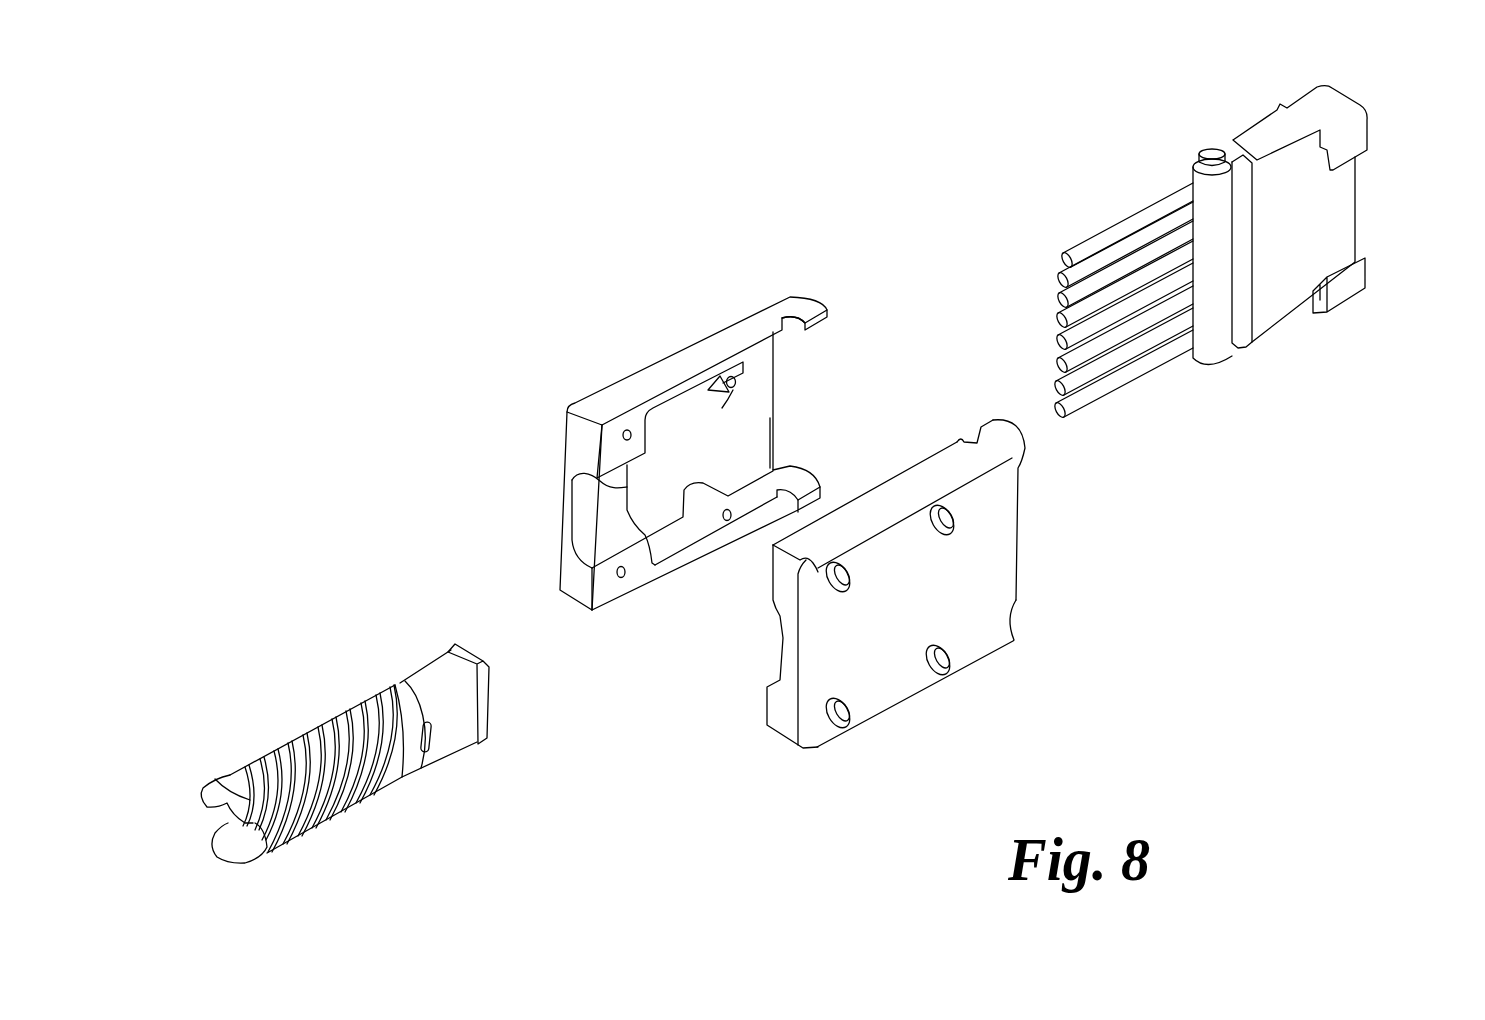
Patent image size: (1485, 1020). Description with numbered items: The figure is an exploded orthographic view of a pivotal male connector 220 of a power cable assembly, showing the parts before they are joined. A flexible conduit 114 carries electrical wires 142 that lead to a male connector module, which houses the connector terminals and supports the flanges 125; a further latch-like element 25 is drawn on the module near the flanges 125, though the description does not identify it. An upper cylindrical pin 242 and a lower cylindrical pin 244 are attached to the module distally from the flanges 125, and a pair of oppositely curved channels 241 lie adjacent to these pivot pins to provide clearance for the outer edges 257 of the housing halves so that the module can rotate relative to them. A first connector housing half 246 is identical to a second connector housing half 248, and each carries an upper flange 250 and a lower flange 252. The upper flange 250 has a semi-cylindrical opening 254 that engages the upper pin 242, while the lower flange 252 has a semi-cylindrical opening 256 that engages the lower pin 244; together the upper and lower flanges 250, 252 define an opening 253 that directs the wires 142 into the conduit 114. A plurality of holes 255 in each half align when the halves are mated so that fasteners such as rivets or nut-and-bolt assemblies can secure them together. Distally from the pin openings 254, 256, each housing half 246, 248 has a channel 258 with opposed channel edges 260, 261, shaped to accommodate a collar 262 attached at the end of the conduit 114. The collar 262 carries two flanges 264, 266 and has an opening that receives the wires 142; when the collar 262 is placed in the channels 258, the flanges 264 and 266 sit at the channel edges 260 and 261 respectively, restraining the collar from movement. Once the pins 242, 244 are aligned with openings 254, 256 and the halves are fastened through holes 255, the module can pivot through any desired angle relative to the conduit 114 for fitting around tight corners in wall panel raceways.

The pivotal male connector 220 is at (694, 311).
The first connector housing half 246 is at (742, 322).
The second connector housing half 248 is at (1007, 521).
The upper flange 250 is at (653, 372).
The lower flange 252 is at (687, 557).
The opening 253 is at (763, 415).
The semi-cylindrical opening 254 is at (793, 320).
The holes 255 is at (632, 438).
The semi-cylindrical opening 256 is at (800, 478).
The outer edges 257 is at (777, 363).
The channel 258 is at (598, 517).
The channel edge 260 is at (573, 482).
The channel edge 261 is at (586, 556).
The collar 262 is at (428, 666).
The flange 264 is at (489, 665).
The flange 266 is at (426, 757).
The flexible conduit 114 is at (351, 706).
The flanges 125 is at (1300, 92).
The electrical wires 142 is at (1062, 297).
The oppositely curved channels 241 is at (1229, 143).
The upper cylindrical pin 242 is at (1212, 152).
The lower cylindrical pin 244 is at (1210, 370).
The latch 25 is at (1343, 296).